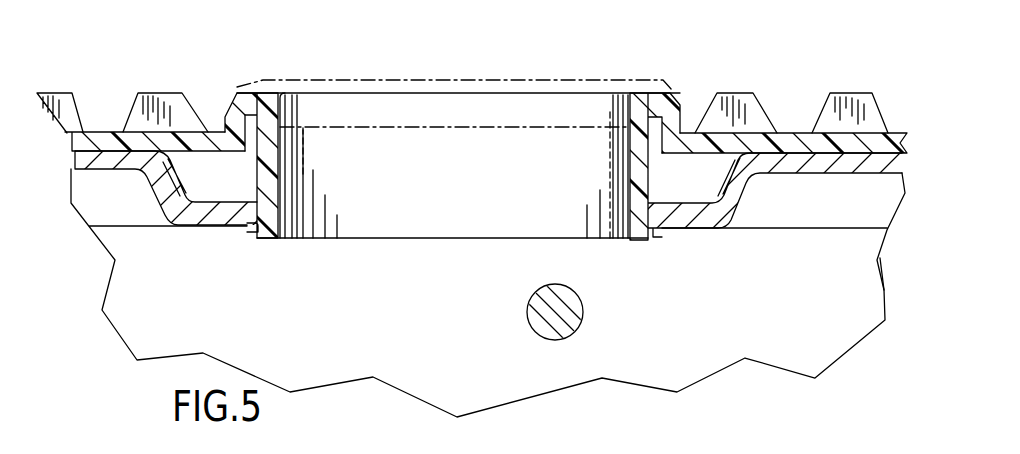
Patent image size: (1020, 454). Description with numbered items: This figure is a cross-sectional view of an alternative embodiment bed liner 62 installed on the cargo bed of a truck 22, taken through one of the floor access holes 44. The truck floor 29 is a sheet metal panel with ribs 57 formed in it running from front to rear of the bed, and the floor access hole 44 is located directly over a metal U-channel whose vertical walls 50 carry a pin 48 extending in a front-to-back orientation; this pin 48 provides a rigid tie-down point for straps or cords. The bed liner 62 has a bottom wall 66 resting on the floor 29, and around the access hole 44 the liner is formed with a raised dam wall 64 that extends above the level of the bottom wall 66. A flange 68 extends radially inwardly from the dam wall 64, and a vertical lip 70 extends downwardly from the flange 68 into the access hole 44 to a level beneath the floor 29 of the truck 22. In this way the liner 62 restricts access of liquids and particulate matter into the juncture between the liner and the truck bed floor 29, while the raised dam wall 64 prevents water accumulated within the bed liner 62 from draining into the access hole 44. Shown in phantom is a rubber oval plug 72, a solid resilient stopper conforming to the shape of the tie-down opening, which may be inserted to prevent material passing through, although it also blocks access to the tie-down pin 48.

The truck 22 is at (858, 286).
The floor 29 is at (132, 228).
The floor access hole 44 is at (637, 195).
The pin 48 is at (583, 298).
The vertical walls 50 is at (767, 311).
The ribs 57 is at (93, 170).
The bed liner 62 is at (799, 102).
The raised dam wall 64 is at (681, 107).
The bottom wall 66 is at (99, 131).
The flange 68 is at (263, 90).
The vertical lip 70 is at (281, 170).
The rubber oval plug 72 is at (553, 80).